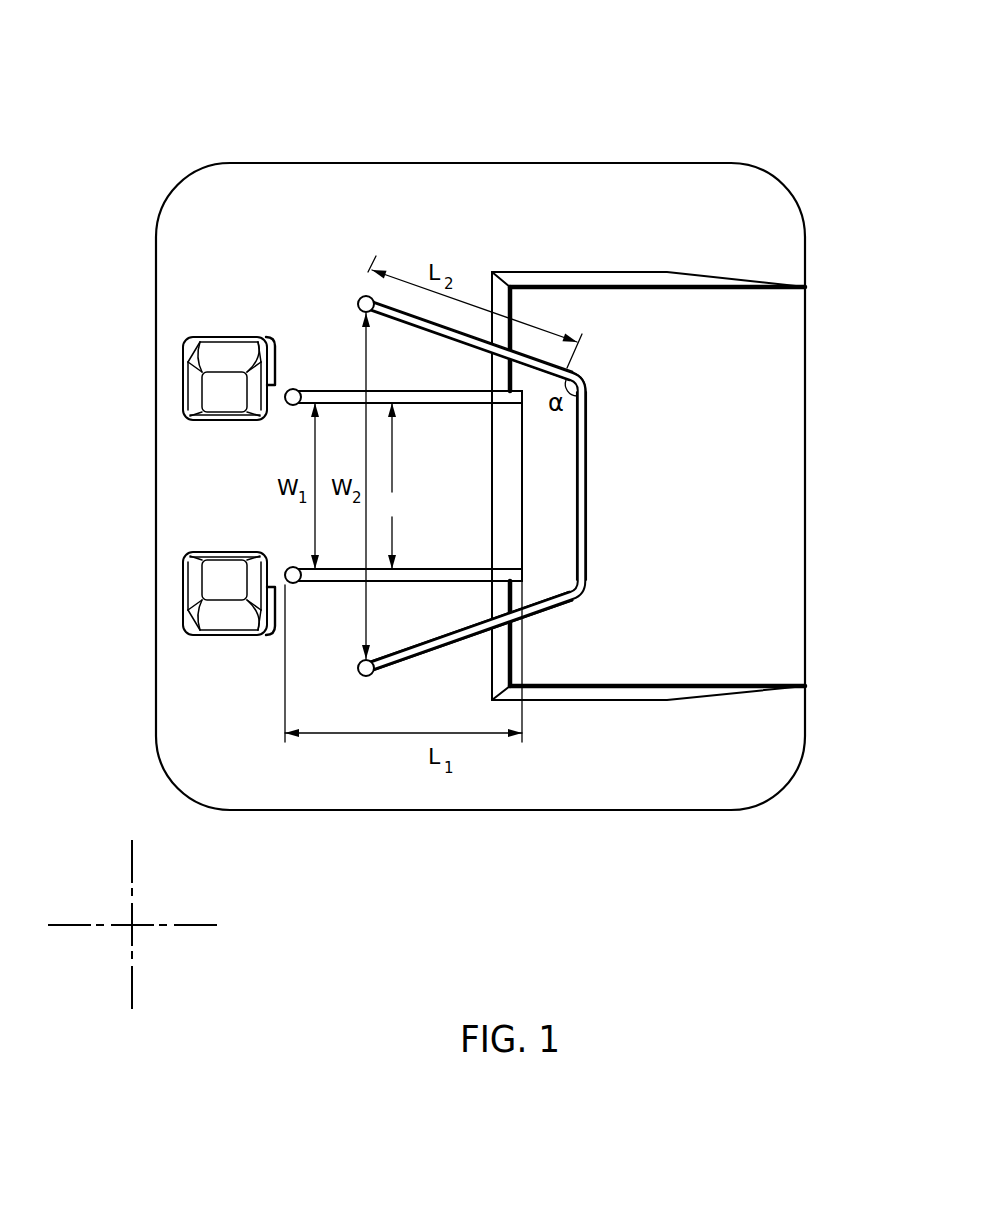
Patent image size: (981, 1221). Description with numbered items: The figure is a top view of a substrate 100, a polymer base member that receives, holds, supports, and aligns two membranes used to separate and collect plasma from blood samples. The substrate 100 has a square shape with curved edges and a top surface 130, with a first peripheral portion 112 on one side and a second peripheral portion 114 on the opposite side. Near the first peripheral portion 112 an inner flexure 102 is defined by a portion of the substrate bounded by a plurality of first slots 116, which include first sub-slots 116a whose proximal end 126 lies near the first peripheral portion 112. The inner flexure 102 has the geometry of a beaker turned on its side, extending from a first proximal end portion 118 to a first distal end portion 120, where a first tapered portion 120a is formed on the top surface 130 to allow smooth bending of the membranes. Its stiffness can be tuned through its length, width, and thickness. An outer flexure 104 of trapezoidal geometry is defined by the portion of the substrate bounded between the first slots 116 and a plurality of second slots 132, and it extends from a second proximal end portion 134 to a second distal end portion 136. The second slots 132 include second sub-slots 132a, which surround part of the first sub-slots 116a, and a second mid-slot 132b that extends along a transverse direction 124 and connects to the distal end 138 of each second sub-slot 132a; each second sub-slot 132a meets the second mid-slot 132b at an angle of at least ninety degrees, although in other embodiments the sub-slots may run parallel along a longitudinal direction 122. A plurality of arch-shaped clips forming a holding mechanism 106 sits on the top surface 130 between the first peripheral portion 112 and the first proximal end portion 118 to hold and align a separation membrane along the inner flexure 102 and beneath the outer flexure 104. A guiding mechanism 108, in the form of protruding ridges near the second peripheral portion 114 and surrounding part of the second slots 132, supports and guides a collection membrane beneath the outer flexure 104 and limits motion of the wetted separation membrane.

The substrate 100 is at (733, 55).
The inner flexure 102 is at (342, 546).
The outer flexure 104 is at (413, 627).
The holding mechanism 106 is at (193, 420).
The guiding mechanism 108 is at (643, 287).
The first peripheral portion 112 is at (150, 386).
The second peripheral portion 114 is at (812, 386).
The first slots 116 is at (391, 486).
The first sub-slots 116a is at (457, 568).
The first proximal end portion 118 is at (297, 518).
The first distal end portion 120 is at (500, 505).
The first tapered portion 120a is at (500, 557).
The longitudinal direction 122 is at (187, 924).
The transverse direction 124 is at (134, 975).
The proximal end 126 is at (292, 408).
The top surface 130 is at (276, 172).
The second slots 132 is at (495, 355).
The second sub-slots 132a is at (457, 342).
The second mid-slot 132b is at (587, 452).
The second proximal end portion 134 is at (385, 377).
The second distal end portion 136 is at (558, 505).
The distal end 138 is at (586, 383).